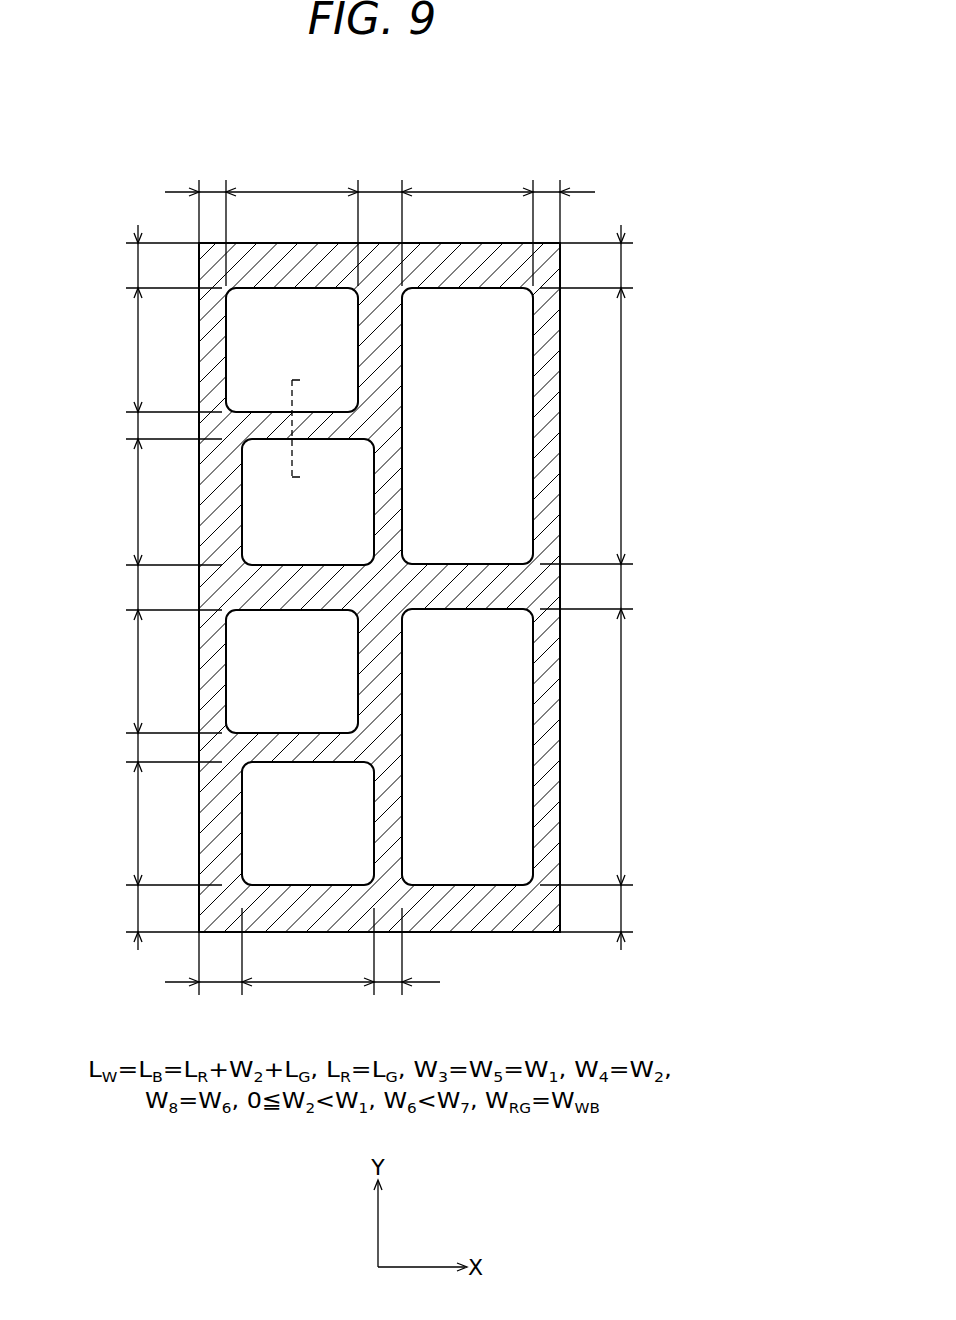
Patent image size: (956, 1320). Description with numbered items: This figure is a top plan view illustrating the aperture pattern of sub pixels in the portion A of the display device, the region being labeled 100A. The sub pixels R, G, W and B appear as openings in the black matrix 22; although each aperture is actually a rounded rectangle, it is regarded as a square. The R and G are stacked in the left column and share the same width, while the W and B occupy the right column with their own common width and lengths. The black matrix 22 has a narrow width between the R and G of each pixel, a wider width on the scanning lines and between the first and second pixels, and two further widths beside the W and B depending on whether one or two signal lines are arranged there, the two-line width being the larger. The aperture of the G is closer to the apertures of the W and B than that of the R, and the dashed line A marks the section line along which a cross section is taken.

The black matrix 22 is at (510, 920).
The pixel unit 100A is at (342, 115).
The R sub pixel R is at (292, 510).
The G sub pixel G is at (308, 662).
The W sub pixel W is at (467, 426).
The B sub pixel B is at (467, 747).
The portion A is at (297, 379).